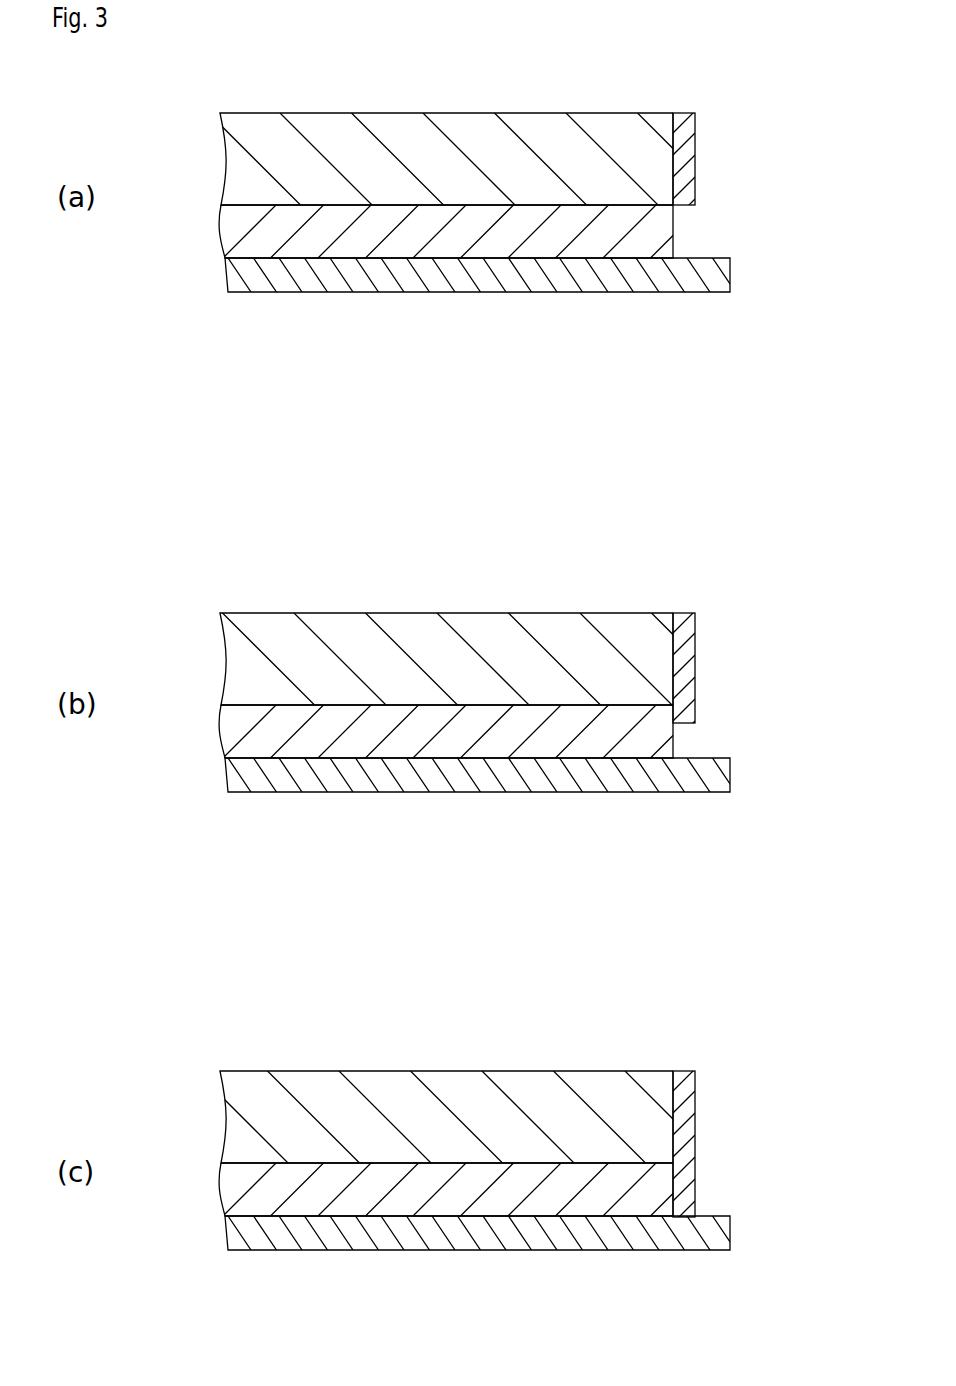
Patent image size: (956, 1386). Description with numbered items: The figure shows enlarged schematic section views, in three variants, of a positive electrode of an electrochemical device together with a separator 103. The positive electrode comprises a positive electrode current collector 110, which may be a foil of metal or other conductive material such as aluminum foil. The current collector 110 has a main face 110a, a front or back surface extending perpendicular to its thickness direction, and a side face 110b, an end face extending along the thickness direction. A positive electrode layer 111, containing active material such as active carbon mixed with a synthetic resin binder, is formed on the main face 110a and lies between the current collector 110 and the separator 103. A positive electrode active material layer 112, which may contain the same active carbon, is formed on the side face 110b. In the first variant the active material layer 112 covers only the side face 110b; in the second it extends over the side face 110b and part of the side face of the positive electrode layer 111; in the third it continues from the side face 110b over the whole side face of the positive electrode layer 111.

The separator 103 is at (480, 275).
The positive electrode current collector 110 is at (478, 135).
The main face 110a is at (647, 207).
The side face 110b is at (689, 127).
The positive electrode layer 111 is at (545, 240).
The positive electrode active material layer 112 is at (682, 155).